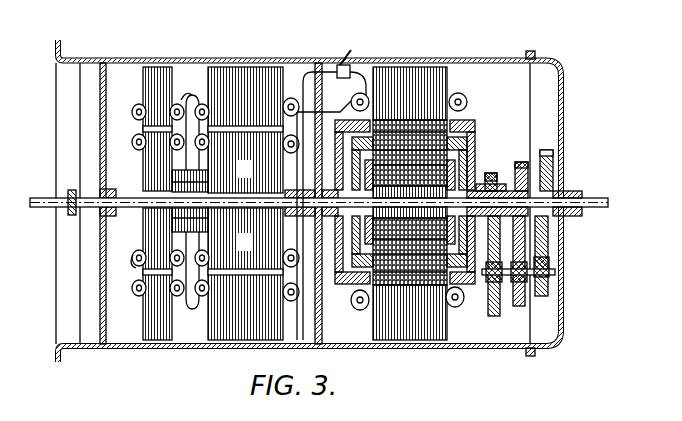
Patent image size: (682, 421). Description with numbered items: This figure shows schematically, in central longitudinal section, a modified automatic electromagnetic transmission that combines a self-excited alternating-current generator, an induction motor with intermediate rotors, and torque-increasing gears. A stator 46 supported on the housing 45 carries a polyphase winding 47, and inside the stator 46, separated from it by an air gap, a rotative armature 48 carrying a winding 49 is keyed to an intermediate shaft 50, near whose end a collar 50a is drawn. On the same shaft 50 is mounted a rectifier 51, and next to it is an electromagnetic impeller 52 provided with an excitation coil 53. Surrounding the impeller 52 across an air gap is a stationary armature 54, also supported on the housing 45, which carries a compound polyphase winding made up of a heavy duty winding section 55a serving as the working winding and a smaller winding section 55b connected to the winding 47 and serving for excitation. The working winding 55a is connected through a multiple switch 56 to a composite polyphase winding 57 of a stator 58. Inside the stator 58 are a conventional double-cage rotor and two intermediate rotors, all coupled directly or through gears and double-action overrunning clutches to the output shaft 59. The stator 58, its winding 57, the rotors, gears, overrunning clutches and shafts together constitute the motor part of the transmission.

The housing 45 is at (114, 61).
The stator 46 is at (160, 341).
The polyphase winding 47 is at (143, 297).
The rotative armature 48 is at (157, 213).
The winding 49 is at (137, 264).
The intermediate shaft 50 is at (88, 208).
The shaft collar 50a is at (43, 196).
The rectifier 51 is at (180, 192).
The electromagnetic impeller 52 is at (277, 249).
The excitation coil 53 is at (284, 262).
The stationary armature 54 is at (239, 72).
The heavy duty winding section 55a is at (331, 206).
The smaller winding section 55b is at (203, 92).
The multiple switch 56 is at (338, 63).
The composite polyphase winding 57 is at (462, 100).
The stator 58 is at (405, 72).
The output shaft 59 is at (598, 198).